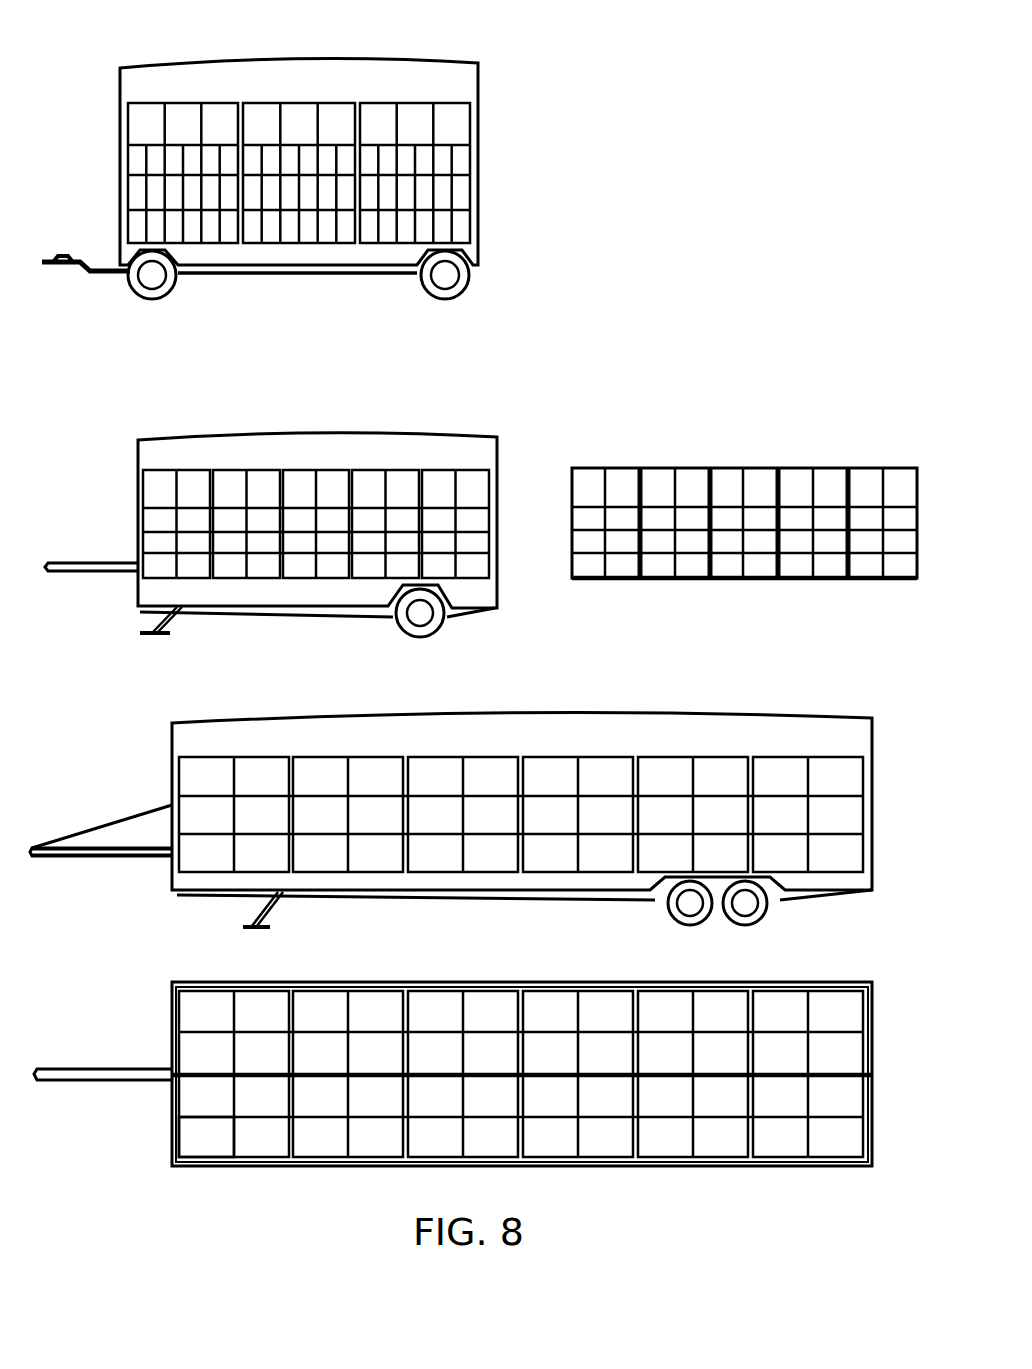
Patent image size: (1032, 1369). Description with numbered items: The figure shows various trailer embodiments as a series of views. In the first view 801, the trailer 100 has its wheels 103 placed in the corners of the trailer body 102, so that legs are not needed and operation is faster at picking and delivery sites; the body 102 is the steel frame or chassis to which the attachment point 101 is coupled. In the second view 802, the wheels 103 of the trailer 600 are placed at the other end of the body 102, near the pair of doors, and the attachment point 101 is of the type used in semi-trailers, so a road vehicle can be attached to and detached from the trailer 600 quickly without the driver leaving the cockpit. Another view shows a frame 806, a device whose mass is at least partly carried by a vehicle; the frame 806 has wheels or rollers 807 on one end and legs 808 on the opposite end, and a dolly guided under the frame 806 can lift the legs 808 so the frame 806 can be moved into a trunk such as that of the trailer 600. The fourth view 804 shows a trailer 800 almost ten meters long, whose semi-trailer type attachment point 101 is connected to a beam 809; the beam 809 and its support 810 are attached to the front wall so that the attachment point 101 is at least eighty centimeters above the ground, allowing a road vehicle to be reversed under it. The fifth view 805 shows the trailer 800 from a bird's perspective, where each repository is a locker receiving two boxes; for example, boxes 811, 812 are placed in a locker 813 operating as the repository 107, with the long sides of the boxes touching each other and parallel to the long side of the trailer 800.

The first view 801 is at (87, 54).
The trailer 100 is at (302, 57).
The body 102 is at (300, 278).
The wheels 103 is at (166, 294).
The trailer 600 is at (302, 433).
The attachment point 101 is at (60, 575).
The second view 802 is at (633, 447).
The frame 806 is at (742, 469).
The wheels or rollers 807 is at (641, 581).
The legs 808 is at (849, 581).
The fourth view 804 is at (87, 746).
The trailer 800 is at (851, 893).
The support 810 is at (112, 816).
The beam 809 is at (133, 858).
The fifth view 805 is at (86, 1011).
The box 812 is at (196, 1103).
The box 811 is at (194, 1140).
The first repository 107 is at (206, 1137).
The locker 813 is at (210, 1142).